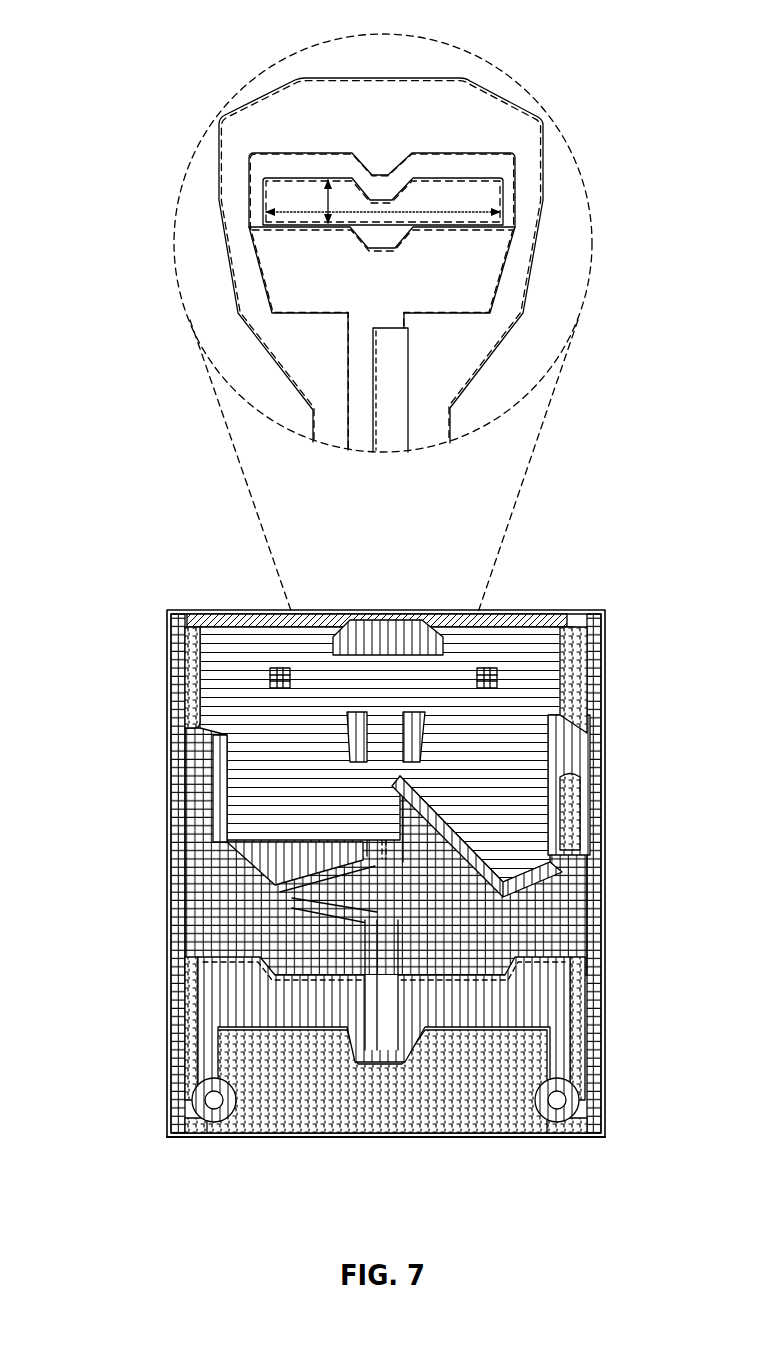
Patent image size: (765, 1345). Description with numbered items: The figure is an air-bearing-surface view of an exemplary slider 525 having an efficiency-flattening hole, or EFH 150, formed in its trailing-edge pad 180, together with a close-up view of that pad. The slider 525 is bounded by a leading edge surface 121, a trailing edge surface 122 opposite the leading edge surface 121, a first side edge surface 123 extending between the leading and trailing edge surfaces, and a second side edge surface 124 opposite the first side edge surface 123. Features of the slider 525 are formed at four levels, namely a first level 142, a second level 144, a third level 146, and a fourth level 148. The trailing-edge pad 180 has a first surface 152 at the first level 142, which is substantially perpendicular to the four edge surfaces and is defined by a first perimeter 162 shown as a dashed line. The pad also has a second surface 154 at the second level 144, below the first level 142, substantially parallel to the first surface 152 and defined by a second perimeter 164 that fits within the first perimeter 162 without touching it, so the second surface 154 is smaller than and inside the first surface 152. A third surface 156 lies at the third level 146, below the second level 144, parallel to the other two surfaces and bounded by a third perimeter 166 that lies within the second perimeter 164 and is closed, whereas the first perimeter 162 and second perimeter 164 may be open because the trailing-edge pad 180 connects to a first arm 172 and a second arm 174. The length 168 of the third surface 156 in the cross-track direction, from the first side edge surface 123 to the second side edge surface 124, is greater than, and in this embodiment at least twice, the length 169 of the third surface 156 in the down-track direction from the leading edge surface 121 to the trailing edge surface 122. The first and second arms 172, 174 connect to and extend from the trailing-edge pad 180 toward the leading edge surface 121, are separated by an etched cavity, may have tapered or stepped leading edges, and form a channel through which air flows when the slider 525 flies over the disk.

The leading edge surface 121 is at (318, 1140).
The trailing edge surface 122 is at (458, 605).
The first side edge surface 123 is at (168, 838).
The second side edge surface 124 is at (609, 838).
The first level 142 is at (212, 990).
The second level 144 is at (457, 1120).
The third level 146 is at (523, 658).
The fourth level 148 is at (178, 897).
The efficiency-flattening hole (EFH) 150 is at (300, 620).
The first surface 152 is at (333, 126).
The second surface 154 is at (440, 272).
The third surface 156 is at (288, 197).
The first perimeter 162 is at (224, 247).
The second perimeter 164 is at (450, 152).
The third perimeter 166 is at (422, 228).
The length of the third surface in the cross-track direction 168 is at (480, 212).
The length of the third surface in the down-track direction 169 is at (325, 205).
The first arm 172 is at (364, 792).
The second arm 174 is at (405, 768).
The trailing-edge pad 180 is at (150, 85).
The slider 525 is at (160, 565).